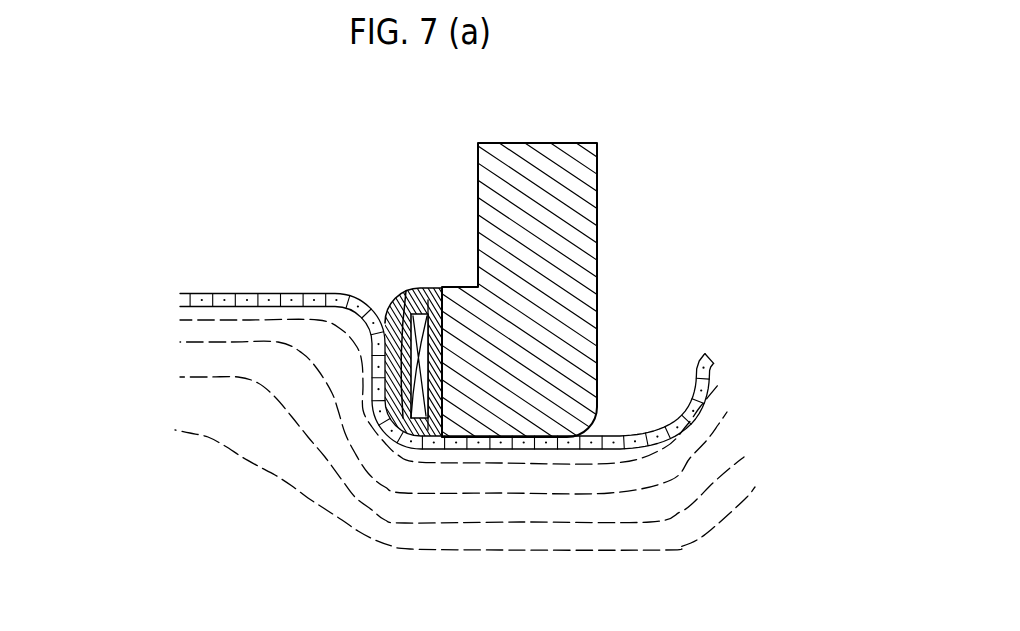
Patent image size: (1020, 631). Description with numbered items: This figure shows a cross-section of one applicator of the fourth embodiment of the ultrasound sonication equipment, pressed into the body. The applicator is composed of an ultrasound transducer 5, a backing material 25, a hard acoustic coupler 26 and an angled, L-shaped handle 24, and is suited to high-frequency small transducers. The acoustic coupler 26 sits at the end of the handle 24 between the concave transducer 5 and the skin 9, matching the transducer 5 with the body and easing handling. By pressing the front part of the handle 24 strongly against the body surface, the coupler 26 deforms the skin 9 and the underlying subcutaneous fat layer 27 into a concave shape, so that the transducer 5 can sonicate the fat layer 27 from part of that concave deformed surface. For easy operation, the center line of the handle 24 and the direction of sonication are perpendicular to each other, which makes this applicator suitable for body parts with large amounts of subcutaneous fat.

The ultrasound transducer 5 is at (428, 350).
The skin 9 is at (222, 293).
The handle 24 is at (597, 232).
The backing material 25 is at (430, 287).
The acoustic coupler 26 is at (390, 325).
The fat layer 27 is at (245, 368).